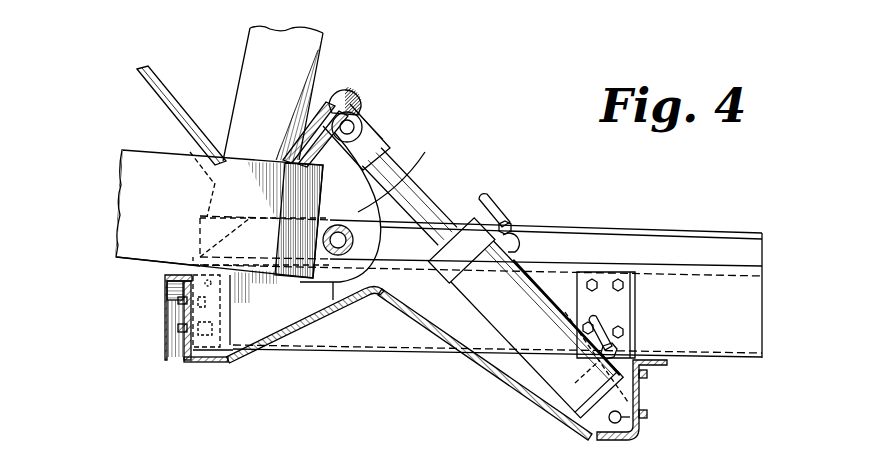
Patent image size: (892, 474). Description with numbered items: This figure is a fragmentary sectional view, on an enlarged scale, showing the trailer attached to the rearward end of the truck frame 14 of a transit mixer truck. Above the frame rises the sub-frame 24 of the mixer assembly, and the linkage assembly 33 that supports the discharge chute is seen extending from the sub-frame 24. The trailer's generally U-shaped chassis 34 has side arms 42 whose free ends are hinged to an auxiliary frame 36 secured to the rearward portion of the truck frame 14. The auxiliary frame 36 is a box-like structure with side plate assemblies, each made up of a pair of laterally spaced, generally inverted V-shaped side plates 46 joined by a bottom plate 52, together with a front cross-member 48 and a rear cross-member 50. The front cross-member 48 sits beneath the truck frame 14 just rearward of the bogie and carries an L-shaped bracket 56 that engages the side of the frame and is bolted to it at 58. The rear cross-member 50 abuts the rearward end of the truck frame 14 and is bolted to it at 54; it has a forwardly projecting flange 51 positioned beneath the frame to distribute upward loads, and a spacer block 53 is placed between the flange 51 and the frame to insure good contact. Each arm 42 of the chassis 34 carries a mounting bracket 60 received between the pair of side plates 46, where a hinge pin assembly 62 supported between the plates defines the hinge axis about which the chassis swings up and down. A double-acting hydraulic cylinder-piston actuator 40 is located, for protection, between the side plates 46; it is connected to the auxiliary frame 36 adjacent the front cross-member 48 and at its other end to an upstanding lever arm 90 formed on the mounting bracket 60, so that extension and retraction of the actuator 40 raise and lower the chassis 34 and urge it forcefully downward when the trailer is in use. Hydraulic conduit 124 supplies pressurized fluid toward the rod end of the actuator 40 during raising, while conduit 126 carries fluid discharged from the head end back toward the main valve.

The truck frame 14 is at (733, 360).
The sub-frame 24 is at (323, 64).
The linkage assembly 33 is at (166, 95).
The chassis 34 is at (118, 260).
The auxiliary frame 36 is at (500, 372).
The hydraulic cylinder-piston actuator 40 is at (513, 262).
The side arm 42 is at (130, 150).
The side plate 46 is at (308, 305).
The front cross-member 48 is at (650, 404).
The rear cross-member 50 is at (172, 360).
The flange 51 is at (200, 362).
The bottom plate 52 is at (457, 354).
The spacer block 53 is at (212, 352).
The bolts 54 is at (178, 328).
The L-shaped bracket 56 is at (640, 309).
The bolts 58 is at (622, 279).
The mounting bracket 60 is at (398, 178).
The hinge pin assembly 62 is at (334, 293).
The lever arm 90 is at (357, 101).
The conduit 124 is at (490, 200).
The conduit 126 is at (596, 320).